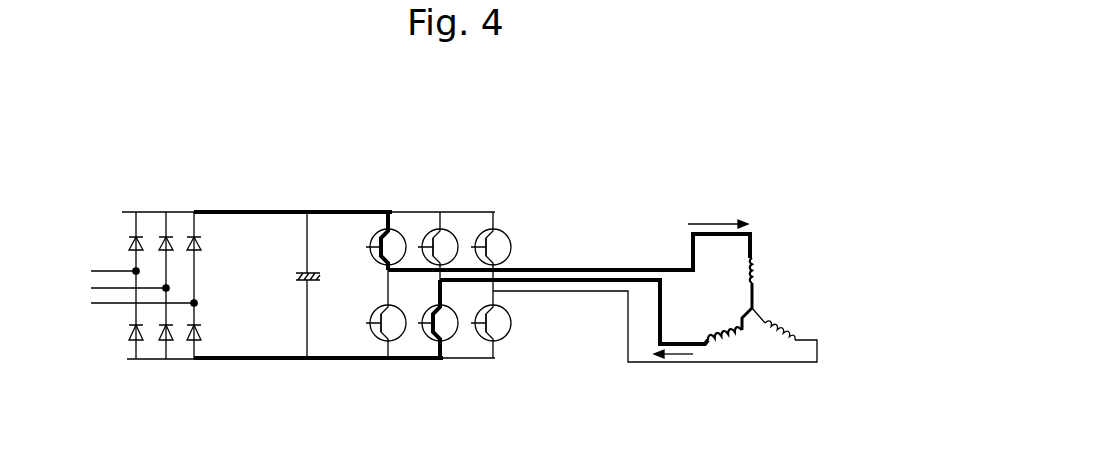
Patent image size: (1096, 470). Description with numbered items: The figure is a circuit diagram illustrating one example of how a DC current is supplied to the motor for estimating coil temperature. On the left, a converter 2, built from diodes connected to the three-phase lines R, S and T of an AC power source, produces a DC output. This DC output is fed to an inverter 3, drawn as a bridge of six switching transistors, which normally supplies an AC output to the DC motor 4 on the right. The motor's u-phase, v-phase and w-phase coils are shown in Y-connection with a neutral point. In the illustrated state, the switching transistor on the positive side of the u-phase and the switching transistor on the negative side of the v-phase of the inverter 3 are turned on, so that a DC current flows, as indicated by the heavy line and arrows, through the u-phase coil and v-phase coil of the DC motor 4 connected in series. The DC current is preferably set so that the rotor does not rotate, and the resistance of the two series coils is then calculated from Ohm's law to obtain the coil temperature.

The converter 2 is at (172, 178).
The inverter 3 is at (482, 182).
The DC motor 4 is at (804, 214).